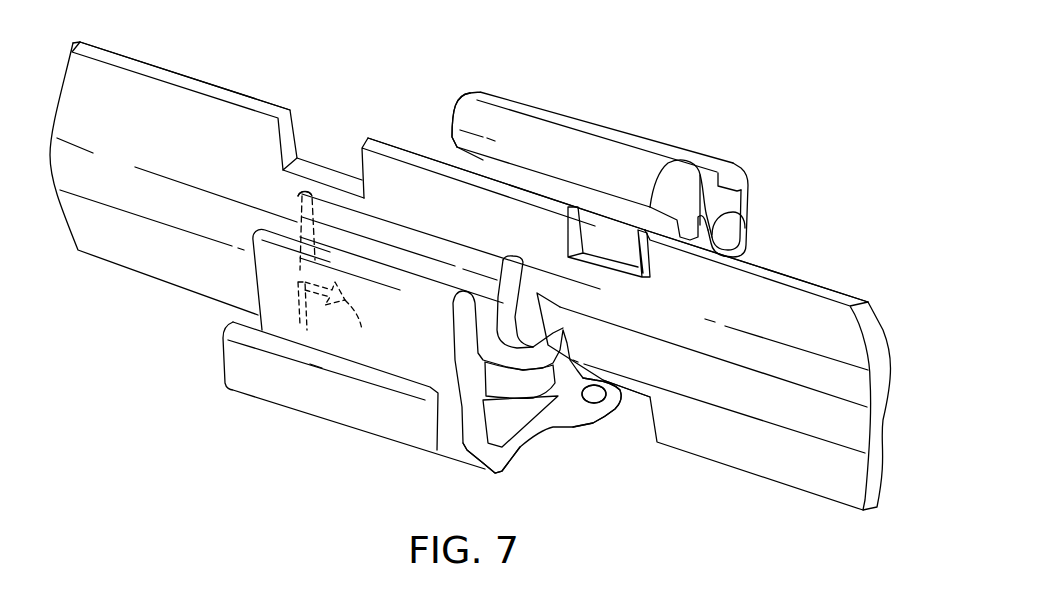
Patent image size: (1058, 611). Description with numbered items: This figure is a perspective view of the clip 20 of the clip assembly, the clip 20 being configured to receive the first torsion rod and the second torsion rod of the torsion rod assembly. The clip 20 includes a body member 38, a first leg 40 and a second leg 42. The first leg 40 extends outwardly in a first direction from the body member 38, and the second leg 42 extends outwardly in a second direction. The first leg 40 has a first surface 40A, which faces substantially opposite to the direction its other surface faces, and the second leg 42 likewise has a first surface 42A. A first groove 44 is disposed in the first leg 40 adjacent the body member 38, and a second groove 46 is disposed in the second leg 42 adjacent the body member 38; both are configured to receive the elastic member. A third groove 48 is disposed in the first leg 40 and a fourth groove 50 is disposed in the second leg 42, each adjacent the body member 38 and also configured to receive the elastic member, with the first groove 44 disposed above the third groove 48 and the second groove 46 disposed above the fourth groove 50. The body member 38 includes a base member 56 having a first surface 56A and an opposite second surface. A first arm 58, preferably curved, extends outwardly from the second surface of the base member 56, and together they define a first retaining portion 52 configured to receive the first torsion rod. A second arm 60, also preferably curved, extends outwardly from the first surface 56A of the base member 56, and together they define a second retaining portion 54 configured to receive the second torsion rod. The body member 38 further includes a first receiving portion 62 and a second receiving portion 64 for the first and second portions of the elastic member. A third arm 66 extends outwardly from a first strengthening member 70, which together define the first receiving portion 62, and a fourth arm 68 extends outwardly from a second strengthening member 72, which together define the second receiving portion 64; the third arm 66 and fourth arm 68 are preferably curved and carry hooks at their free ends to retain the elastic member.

The clip 20 is at (580, 430).
The body member 38 is at (572, 103).
The first leg 40 is at (765, 480).
The first surface 40A is at (818, 320).
The second leg 42 is at (133, 268).
The first surface 42A is at (180, 115).
The first groove 44 is at (617, 283).
The second groove 46 is at (323, 178).
The third groove 48 is at (610, 385).
The fourth groove 50 is at (362, 330).
The first retaining portion 52 is at (567, 224).
The second retaining portion 54 is at (534, 345).
The base member 56 is at (383, 130).
The first surface 56A is at (405, 190).
The first arm 58 is at (612, 235).
The second arm 60 is at (300, 196).
The first receiving portion 62 is at (723, 217).
The second receiving portion 64 is at (435, 425).
The third arm 66 is at (666, 155).
The fourth arm 68 is at (327, 390).
The first strengthening member 70 is at (500, 95).
The second strengthening member 72 is at (262, 232).